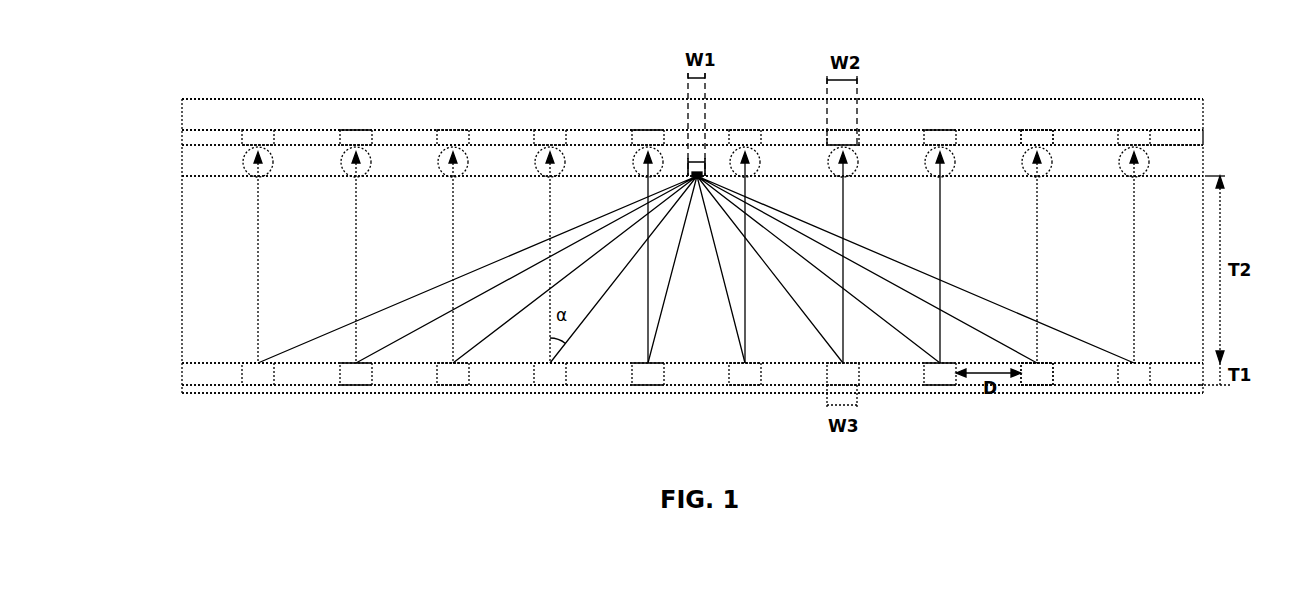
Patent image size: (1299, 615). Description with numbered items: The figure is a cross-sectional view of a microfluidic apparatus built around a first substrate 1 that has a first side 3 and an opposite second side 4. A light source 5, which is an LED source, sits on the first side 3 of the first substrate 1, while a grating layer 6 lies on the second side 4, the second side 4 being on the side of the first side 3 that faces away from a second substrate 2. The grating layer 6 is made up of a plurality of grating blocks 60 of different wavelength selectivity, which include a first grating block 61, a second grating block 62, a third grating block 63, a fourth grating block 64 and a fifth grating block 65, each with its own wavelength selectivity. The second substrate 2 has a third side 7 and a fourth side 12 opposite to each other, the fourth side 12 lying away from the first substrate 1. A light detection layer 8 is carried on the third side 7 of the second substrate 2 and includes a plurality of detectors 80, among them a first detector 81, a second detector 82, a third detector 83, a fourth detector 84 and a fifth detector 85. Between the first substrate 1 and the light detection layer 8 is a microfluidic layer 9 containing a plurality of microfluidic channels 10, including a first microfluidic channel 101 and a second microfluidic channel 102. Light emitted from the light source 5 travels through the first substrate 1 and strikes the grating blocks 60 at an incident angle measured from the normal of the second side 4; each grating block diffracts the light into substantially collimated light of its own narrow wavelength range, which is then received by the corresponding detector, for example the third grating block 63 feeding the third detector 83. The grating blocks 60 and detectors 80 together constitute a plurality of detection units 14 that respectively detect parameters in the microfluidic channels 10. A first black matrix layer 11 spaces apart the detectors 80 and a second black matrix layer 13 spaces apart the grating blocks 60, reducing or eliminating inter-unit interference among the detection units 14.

The first substrate 1 is at (182, 270).
The second substrate 2 is at (182, 117).
The first side 3 is at (1172, 178).
The second side 4 is at (1172, 363).
The light source 5 is at (688, 165).
The grating layer 6 is at (243, 367).
The third side 7 is at (1095, 130).
The light detection layer 8 is at (258, 138).
The microfluidic layer 9 is at (182, 160).
The microfluidic channels 10 is at (678, 191).
The first black matrix layer 11 is at (1193, 137).
The fourth side 12 is at (1172, 99).
The second black matrix layer 13 is at (217, 388).
The detection units 14 is at (985, 60).
The grating blocks 60 is at (695, 270).
The first grating block 61 is at (258, 390).
The second grating block 62 is at (356, 390).
The third grating block 63 is at (453, 390).
The fourth grating block 64 is at (550, 390).
The fifth grating block 65 is at (648, 390).
The detectors 80 is at (696, 82).
The first detector 81 is at (258, 129).
The second detector 82 is at (356, 128).
The third detector 83 is at (453, 128).
The fourth detector 84 is at (550, 128).
The fifth detector 85 is at (648, 128).
The first microfluidic channel 101 is at (246, 160).
The second microfluidic channel 102 is at (338, 162).